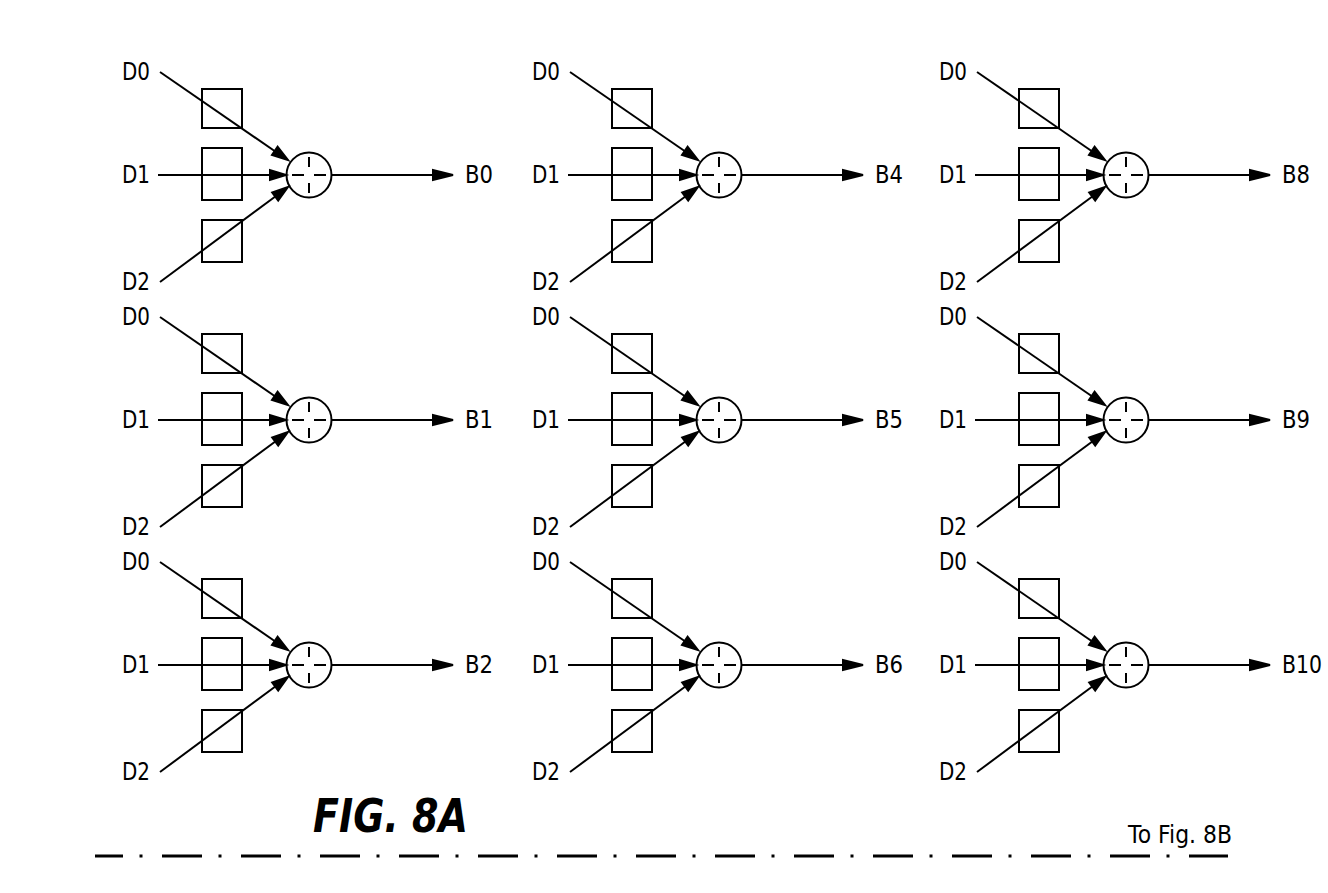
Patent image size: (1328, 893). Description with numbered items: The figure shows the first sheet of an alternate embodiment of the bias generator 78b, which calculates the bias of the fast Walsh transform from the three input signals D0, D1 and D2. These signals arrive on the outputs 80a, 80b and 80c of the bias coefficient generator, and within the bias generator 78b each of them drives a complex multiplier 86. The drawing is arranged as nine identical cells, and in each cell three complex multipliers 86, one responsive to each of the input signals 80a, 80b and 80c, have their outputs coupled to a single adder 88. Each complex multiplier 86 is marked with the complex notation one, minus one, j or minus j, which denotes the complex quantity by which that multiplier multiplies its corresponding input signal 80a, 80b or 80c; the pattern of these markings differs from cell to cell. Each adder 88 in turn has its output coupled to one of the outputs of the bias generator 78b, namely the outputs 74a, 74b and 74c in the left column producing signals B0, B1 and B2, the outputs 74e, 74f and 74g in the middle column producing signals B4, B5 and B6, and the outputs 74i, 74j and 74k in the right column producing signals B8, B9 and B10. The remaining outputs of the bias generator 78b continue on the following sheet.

The output of bias generator 74a is at (367, 174).
The output of bias generator 74b is at (393, 405).
The output of bias generator 74c is at (393, 650).
The output of bias generator 74e is at (803, 160).
The output of bias generator 74f is at (803, 405).
The output of bias generator 74g is at (803, 650).
The output of bias generator 74i is at (1210, 160).
The output of bias generator 74j is at (1210, 405).
The output of bias generator 74k is at (1210, 650).
The bias generator 78b is at (813, 769).
The output of bias coefficient generator 80a is at (183, 89).
The output of bias coefficient generator 80b is at (186, 174).
The output of bias coefficient generator 80c is at (185, 265).
The complex multiplier 86 is at (242, 110).
The adder 88 is at (308, 152).